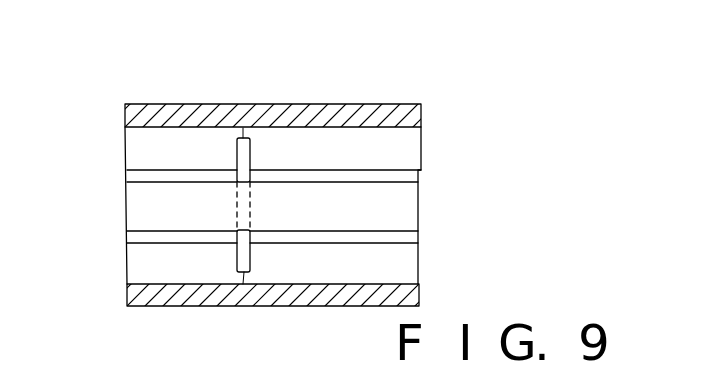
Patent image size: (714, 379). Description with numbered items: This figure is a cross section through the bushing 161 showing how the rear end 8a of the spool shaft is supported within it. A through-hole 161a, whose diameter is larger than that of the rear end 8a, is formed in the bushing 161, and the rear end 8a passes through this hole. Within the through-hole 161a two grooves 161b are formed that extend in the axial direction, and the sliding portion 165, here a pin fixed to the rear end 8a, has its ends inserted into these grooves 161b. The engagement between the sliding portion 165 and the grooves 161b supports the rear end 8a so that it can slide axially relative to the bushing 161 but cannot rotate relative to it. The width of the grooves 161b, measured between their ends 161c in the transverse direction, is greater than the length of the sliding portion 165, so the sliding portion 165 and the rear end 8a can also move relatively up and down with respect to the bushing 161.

The bushing 161 is at (357, 104).
The through-hole 161a is at (381, 171).
The grooves 161b is at (373, 152).
The ends 161c is at (243, 135).
The sliding portion 165 is at (237, 152).
The rear end 8a is at (173, 215).